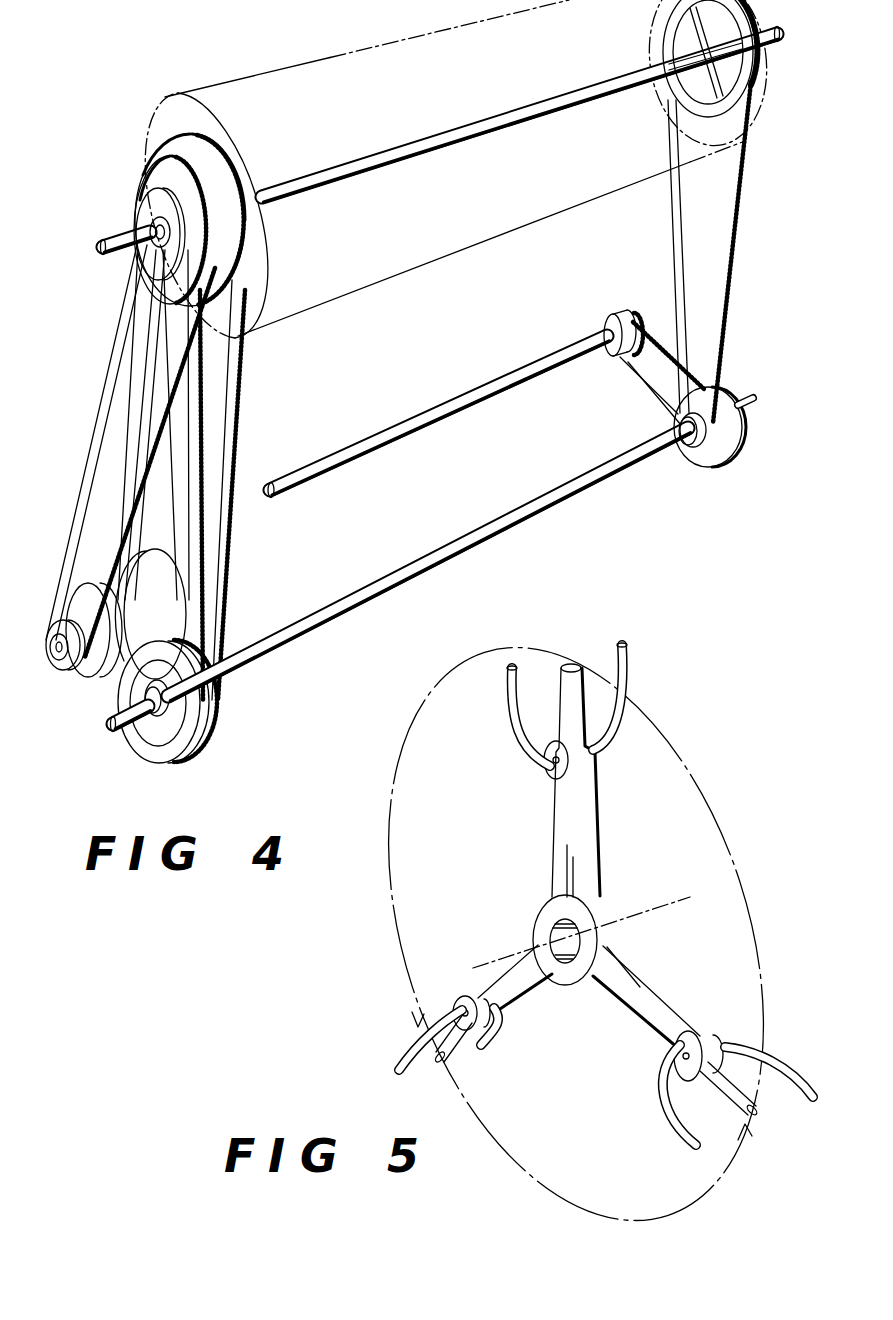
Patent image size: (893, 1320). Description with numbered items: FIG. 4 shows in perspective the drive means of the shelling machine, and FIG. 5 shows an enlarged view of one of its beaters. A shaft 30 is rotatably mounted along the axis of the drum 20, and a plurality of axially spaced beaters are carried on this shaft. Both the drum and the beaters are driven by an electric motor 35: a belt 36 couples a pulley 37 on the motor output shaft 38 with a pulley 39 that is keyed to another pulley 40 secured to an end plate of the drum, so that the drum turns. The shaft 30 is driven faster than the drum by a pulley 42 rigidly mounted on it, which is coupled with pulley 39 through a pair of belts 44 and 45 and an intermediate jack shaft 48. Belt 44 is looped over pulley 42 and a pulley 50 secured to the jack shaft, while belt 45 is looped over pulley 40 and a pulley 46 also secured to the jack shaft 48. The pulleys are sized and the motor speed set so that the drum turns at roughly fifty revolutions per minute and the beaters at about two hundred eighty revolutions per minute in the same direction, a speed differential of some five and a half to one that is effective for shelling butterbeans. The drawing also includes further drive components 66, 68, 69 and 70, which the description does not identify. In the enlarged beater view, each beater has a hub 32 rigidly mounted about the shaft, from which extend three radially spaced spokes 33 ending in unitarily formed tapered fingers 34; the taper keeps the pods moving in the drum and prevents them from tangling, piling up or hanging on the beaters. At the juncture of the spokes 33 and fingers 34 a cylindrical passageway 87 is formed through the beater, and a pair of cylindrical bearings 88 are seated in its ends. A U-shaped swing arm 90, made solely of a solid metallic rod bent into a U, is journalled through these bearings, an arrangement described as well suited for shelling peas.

In FIG. 4, the drum 20 is at (320, 60).
In FIG. 4, the shaft 30 is at (128, 237).
In FIG. 5, the hub 32 is at (540, 910).
In FIG. 5, the spokes 33 is at (585, 832).
In FIG. 5, the tapered fingers 34 is at (571, 660).
In FIG. 4, the electric motor 35 is at (97, 673).
In FIG. 4, the belt 36 is at (107, 363).
In FIG. 4, the pulley 37 is at (73, 667).
In FIG. 4, the motor output shaft 38 is at (53, 658).
In FIG. 4, the pulley 39 is at (147, 167).
In FIG. 4, the pulley 40 is at (160, 147).
In FIG. 4, the pulley 42 is at (135, 198).
In FIG. 4, the belt 44 is at (193, 372).
In FIG. 4, the belt 45 is at (242, 348).
In FIG. 4, the pulley 46 is at (217, 704).
In FIG. 4, the jack shaft 48 is at (112, 736).
In FIG. 4, the pulley 50 is at (160, 752).
In FIG. 4, the pulley 66 is at (703, 455).
In FIG. 4, the belt 68 is at (640, 378).
In FIG. 4, the pulley 69 is at (607, 325).
In FIG. 4, the shaft 70 is at (433, 425).
In FIG. 5, the cylindrical passageway 87 is at (565, 962).
In FIG. 5, the cylindrical bearings 88 is at (553, 775).
In FIG. 5, the U-shaped swing arm 90 is at (628, 668).